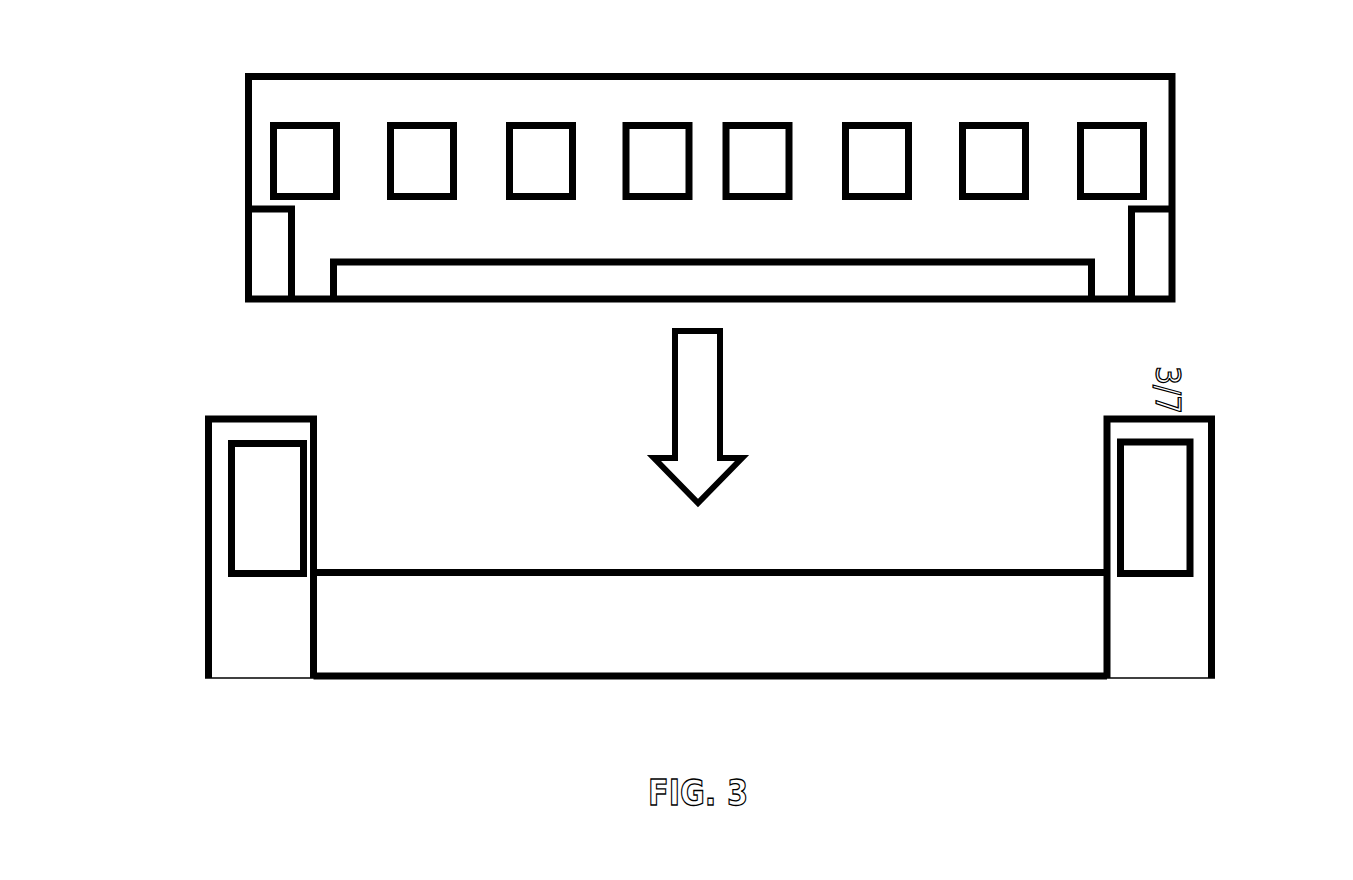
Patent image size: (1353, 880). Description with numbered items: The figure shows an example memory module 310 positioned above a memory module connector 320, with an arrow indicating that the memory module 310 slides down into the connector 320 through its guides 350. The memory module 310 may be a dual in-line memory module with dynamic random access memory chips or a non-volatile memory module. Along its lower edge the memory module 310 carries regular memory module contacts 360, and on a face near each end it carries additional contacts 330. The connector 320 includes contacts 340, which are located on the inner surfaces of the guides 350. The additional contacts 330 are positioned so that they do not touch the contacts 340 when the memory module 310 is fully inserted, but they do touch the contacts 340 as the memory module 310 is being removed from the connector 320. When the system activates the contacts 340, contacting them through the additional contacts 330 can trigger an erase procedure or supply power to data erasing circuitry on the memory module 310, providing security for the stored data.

The memory module 310 is at (357, 70).
The memory module connector 320 is at (505, 700).
The additional contacts 330 is at (261, 256).
The contacts 340 is at (280, 512).
The guides 350 is at (200, 515).
The regular memory module contacts 360 is at (478, 302).